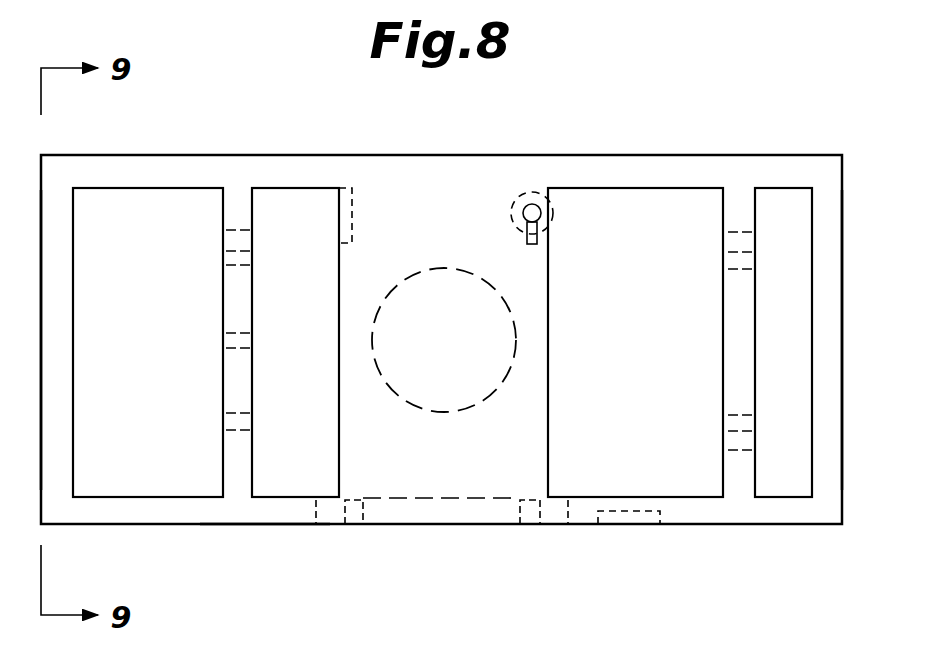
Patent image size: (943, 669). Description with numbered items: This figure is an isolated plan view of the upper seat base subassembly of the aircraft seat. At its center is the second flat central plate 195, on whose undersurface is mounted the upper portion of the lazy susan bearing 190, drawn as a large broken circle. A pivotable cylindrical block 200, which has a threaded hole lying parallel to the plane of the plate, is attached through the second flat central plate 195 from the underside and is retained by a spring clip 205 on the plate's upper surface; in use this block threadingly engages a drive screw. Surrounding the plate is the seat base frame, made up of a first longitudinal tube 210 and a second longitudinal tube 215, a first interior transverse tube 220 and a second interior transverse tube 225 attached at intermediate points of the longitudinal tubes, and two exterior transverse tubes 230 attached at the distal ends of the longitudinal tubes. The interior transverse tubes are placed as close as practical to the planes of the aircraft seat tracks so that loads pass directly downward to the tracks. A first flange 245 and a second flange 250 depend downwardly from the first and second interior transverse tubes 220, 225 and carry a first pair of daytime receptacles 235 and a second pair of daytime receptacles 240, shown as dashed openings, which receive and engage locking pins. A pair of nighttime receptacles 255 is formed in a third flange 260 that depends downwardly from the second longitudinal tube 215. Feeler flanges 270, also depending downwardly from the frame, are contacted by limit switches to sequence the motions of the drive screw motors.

The lazy susan bearing 190 is at (516, 379).
The second flat central plate 195 is at (508, 458).
The pivotable cylindrical block 200 is at (562, 223).
The spring clip 205 is at (531, 248).
The first longitudinal tube 210 is at (679, 154).
The second longitudinal tube 215 is at (264, 528).
The first interior transverse tube 220 is at (219, 383).
The second interior transverse tube 225 is at (719, 375).
The exterior transverse tubes 230 is at (80, 302).
The first pair of daytime receptacles 235 is at (219, 261).
The second pair of daytime receptacles 240 is at (719, 263).
The first flange 245 is at (246, 314).
The second flange 250 is at (748, 311).
The nighttime receptacles 255 is at (530, 530).
The third flange 260 is at (475, 516).
The feeler flanges 270 is at (359, 215).